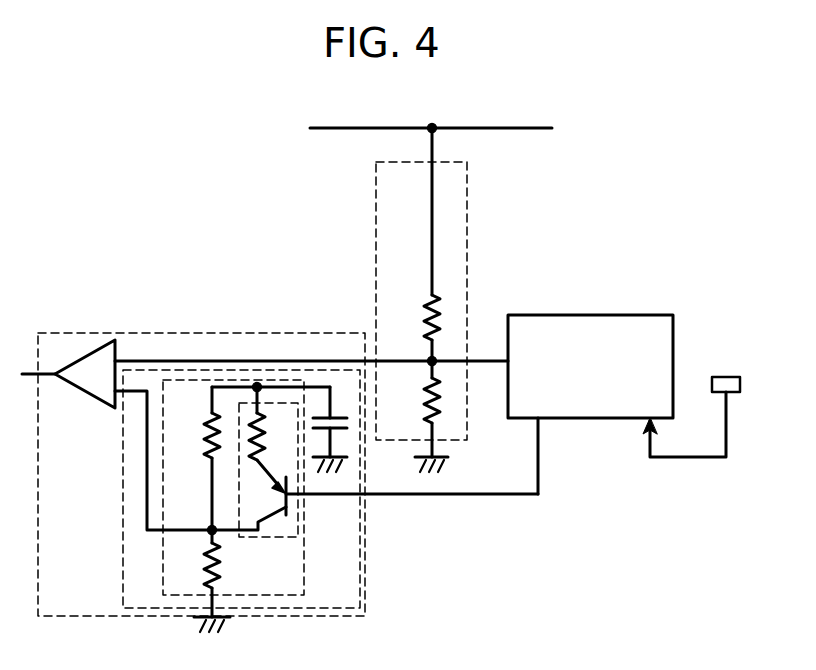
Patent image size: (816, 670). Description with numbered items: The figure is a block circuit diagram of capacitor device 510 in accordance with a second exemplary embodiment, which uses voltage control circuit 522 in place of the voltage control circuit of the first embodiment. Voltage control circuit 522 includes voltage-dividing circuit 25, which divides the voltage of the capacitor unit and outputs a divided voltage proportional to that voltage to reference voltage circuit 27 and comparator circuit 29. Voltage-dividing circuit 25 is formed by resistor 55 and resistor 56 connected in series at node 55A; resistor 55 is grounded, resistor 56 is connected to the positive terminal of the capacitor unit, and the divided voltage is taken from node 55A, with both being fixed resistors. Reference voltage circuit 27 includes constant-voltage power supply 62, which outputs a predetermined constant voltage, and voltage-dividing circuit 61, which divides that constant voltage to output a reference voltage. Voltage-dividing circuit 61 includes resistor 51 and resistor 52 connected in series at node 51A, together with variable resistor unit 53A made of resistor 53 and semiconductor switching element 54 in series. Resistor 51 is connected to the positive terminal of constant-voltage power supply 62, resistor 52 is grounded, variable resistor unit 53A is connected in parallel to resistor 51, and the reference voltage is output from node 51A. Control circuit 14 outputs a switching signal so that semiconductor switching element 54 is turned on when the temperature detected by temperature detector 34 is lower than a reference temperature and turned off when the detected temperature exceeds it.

The capacitor device 510 is at (678, 192).
The voltage control circuit 522 is at (63, 331).
The comparator circuit 29 is at (107, 339).
The reference voltage circuit 27 is at (168, 370).
The voltage-dividing circuit 61 is at (163, 553).
The variable resistor unit 53A is at (277, 539).
The resistor 51 is at (203, 445).
The node 51A is at (212, 530).
The resistor 52 is at (222, 565).
The resistor 53 is at (247, 415).
The semiconductor switching element 54 is at (290, 508).
The constant-voltage power supply 62 is at (322, 412).
The voltage-dividing circuit 25 is at (375, 209).
The resistor 55 is at (447, 407).
The node 55A is at (430, 360).
The resistor 56 is at (445, 307).
The control circuit 14 is at (602, 314).
The temperature detector 34 is at (727, 377).